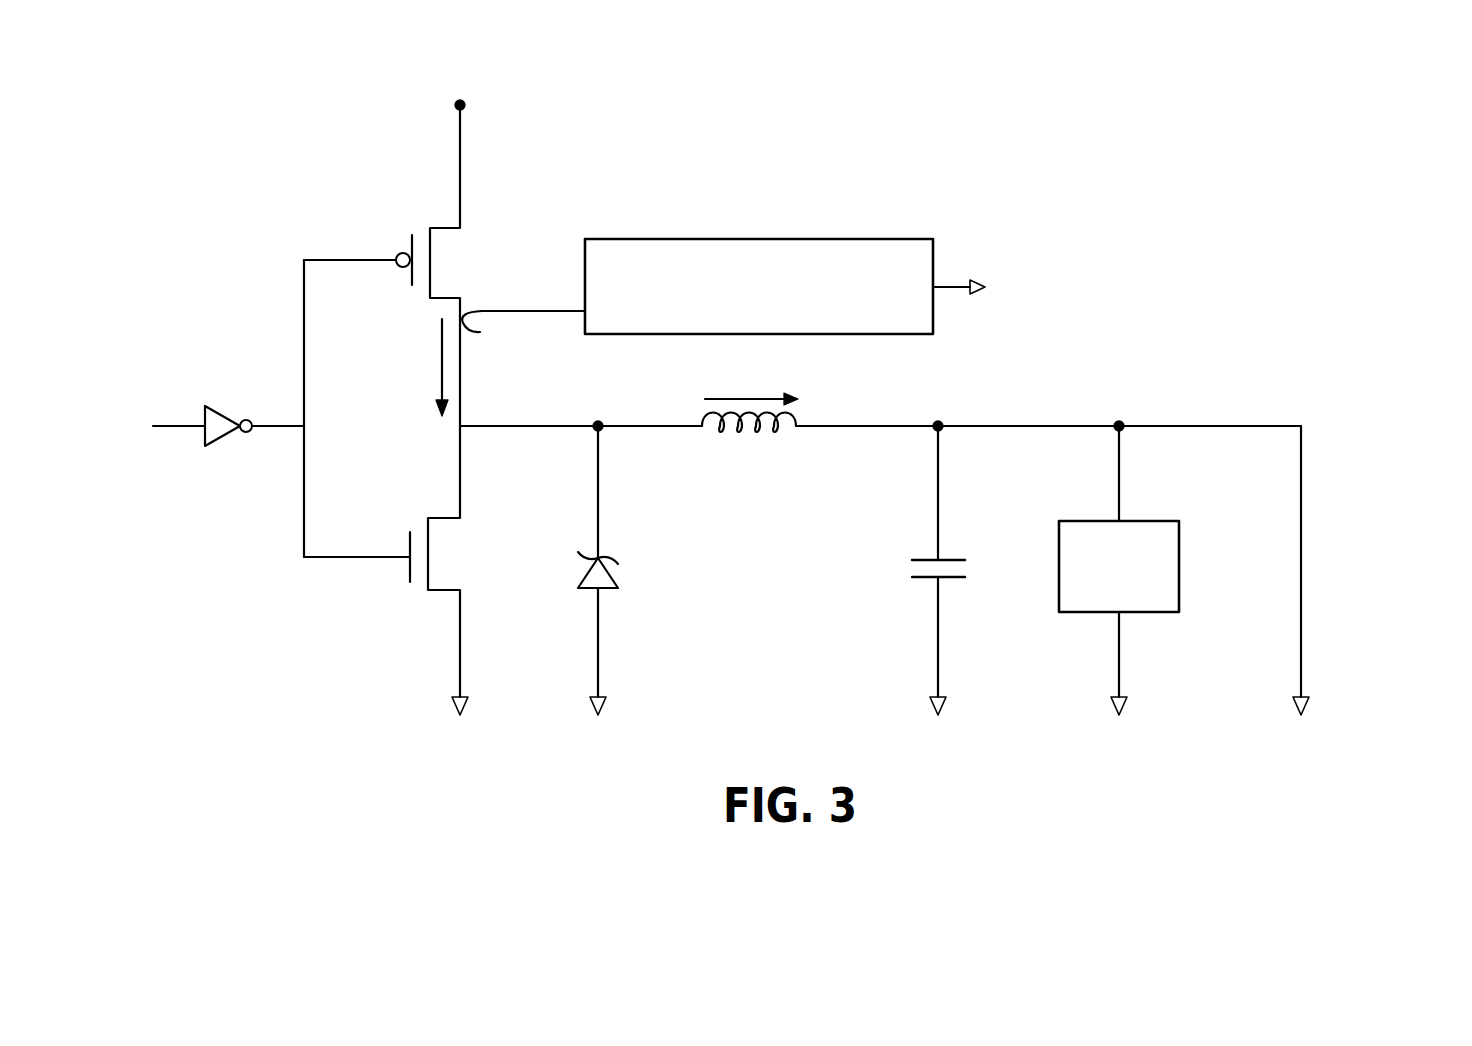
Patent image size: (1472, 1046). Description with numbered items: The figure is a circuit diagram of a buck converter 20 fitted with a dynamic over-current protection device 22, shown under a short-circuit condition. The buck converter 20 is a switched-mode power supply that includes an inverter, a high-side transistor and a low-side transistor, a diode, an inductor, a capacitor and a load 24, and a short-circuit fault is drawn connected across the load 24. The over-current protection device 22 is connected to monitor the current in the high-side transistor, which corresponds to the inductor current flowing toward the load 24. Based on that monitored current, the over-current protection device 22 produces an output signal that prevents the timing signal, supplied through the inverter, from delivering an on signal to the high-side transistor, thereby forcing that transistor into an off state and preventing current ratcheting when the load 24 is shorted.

The buck converter 20 is at (322, 104).
The over-current protection device 22 is at (757, 239).
The load 24 is at (1148, 521).